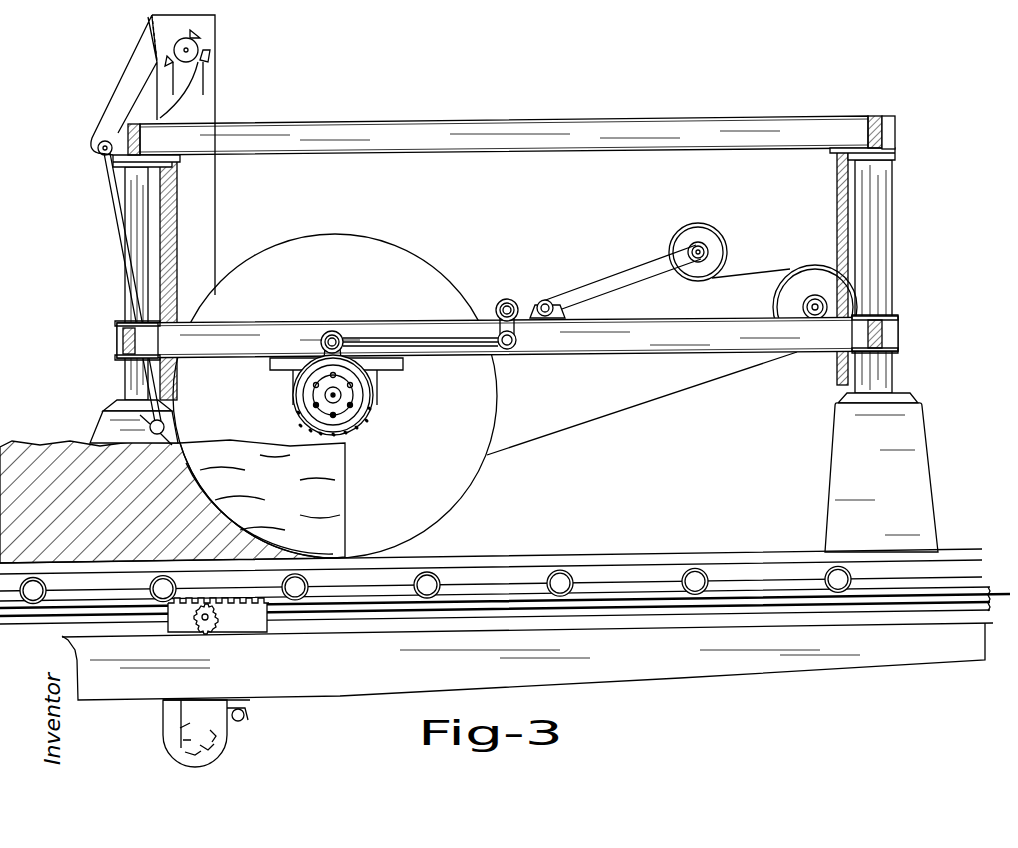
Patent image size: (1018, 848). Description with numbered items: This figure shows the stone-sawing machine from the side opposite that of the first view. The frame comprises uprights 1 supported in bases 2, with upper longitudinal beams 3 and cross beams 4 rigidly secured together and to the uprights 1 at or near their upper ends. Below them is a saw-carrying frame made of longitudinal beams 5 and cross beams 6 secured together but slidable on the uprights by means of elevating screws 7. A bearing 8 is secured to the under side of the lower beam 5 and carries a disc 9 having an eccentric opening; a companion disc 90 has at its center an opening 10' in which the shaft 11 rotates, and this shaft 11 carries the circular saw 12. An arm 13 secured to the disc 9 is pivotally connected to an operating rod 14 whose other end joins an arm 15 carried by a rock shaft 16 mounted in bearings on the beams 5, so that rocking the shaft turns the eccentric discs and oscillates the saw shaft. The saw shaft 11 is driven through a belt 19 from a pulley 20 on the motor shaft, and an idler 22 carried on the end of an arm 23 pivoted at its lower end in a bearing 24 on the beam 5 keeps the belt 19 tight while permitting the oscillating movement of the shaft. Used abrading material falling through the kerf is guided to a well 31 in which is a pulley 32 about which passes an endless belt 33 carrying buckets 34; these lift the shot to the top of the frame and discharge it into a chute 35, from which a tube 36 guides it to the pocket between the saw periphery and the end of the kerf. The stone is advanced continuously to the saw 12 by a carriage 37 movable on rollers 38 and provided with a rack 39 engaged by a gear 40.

The uprights 1 is at (133, 200).
The bases 2 is at (100, 420).
The upper longitudinal beams 3 is at (680, 132).
The cross beams 4 is at (127, 136).
The longitudinal beams 5 is at (661, 337).
The cross beams 6 is at (118, 342).
The elevating screws 7 is at (173, 233).
The bearing 8 is at (305, 365).
The disc 9 is at (355, 382).
The disc 90 is at (350, 395).
The opening 10' is at (362, 426).
The shaft 11 is at (325, 398).
The circular saw 12 is at (458, 465).
The arm 13 is at (328, 360).
The operating rods 14 is at (425, 343).
The arms 15 is at (512, 305).
The rock shaft 16 is at (515, 330).
The belt 19 is at (622, 411).
The pulley 20 is at (805, 285).
The idler 22 is at (700, 226).
The arms 23 is at (642, 268).
The bearings 24 is at (552, 303).
The well 31 is at (222, 745).
The pulley 32 is at (196, 733).
The endless belt 33 is at (213, 57).
The buckets 34 is at (196, 36).
The chute 35 is at (127, 78).
The tube 36 is at (127, 295).
The carriage 37 is at (498, 575).
The rollers 38 is at (420, 553).
The rack 39 is at (240, 598).
The gear 40 is at (212, 628).